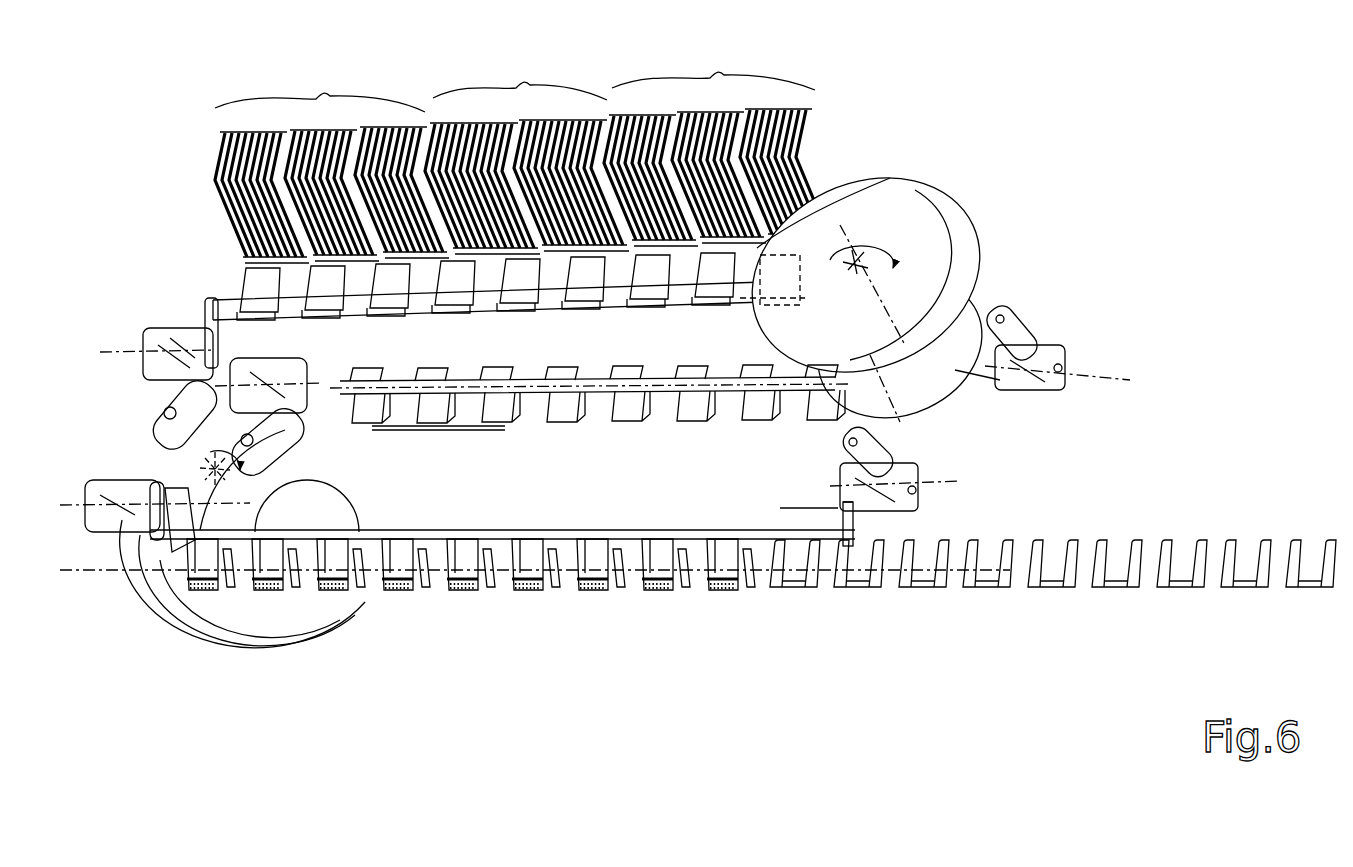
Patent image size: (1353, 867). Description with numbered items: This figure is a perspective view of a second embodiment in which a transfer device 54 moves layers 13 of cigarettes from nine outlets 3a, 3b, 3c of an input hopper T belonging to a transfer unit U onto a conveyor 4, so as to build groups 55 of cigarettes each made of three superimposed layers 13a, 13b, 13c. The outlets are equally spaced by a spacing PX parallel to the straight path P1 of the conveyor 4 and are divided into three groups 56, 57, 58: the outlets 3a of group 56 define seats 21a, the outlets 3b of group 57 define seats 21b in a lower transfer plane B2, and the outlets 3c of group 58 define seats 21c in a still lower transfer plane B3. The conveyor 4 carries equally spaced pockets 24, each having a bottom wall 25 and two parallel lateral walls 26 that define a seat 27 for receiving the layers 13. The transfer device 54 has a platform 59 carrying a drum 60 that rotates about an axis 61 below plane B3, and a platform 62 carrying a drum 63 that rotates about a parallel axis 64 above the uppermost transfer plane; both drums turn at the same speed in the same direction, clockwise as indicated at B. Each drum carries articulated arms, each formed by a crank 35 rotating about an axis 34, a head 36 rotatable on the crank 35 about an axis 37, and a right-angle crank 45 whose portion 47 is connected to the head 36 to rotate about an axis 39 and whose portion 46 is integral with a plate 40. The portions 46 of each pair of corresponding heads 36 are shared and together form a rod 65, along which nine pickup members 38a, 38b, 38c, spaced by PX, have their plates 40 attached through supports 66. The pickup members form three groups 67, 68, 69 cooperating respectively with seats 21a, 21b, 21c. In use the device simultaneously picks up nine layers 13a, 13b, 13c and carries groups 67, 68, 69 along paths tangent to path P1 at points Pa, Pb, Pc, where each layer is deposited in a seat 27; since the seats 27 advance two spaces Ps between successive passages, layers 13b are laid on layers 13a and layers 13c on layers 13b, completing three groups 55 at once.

The outlet 3a is at (785, 105).
The outlet 3b is at (590, 115).
The outlet 3c is at (390, 128).
The conveyor 4 is at (1108, 608).
The layer 13 is at (332, 594).
The layer 13a is at (207, 594).
The layer 13b is at (302, 594).
The layer 13c is at (343, 594).
The seat 21a is at (795, 234).
The seat 21b is at (455, 315).
The seat 21c is at (333, 244).
The pocket 24 is at (1115, 540).
The bottom wall 25 is at (1050, 548).
The lateral wall 26 is at (908, 592).
The seat 27 is at (855, 594).
The axis 34 is at (880, 415).
The crank 35 is at (170, 405).
The head 36 is at (156, 335).
The axis 37 is at (185, 328).
The pickup member 38a is at (745, 310).
The pickup member 38b is at (570, 316).
The pickup member 38c is at (250, 322).
The axis 39 is at (580, 429).
The plate 40 is at (486, 286).
The right-angle crank 45 is at (210, 300).
The portion 46 is at (214, 300).
The portion 47 is at (200, 300).
The transfer device 54 is at (62, 392).
The group of cigarettes 55 is at (255, 594).
The group of outlets 56 is at (718, 75).
The group of outlets 57 is at (522, 86).
The group of outlets 58 is at (320, 96).
The platform 59 is at (155, 618).
The drum 60 is at (130, 440).
The axis 61 is at (200, 466).
The platform 62 is at (962, 232).
The drum 63 is at (1000, 262).
The axis 64 is at (870, 320).
The rod 65 is at (595, 380).
The support 66 is at (700, 428).
The group of pickup members 67 is at (590, 528).
The group of pickup members 68 is at (390, 528).
The group of pickup members 69 is at (300, 510).
The drum rotation B is at (873, 190).
The transfer plane B2 is at (551, 284).
The transfer plane B3 is at (223, 242).
The path P1 is at (752, 592).
The spacing PX is at (760, 332).
The point of tangency Pa is at (665, 594).
The point of tangency Pb is at (528, 594).
The point of tangency Pc is at (265, 594).
The space Ps is at (455, 428).
The input hopper T is at (225, 85).
The transfer unit U is at (128, 280).